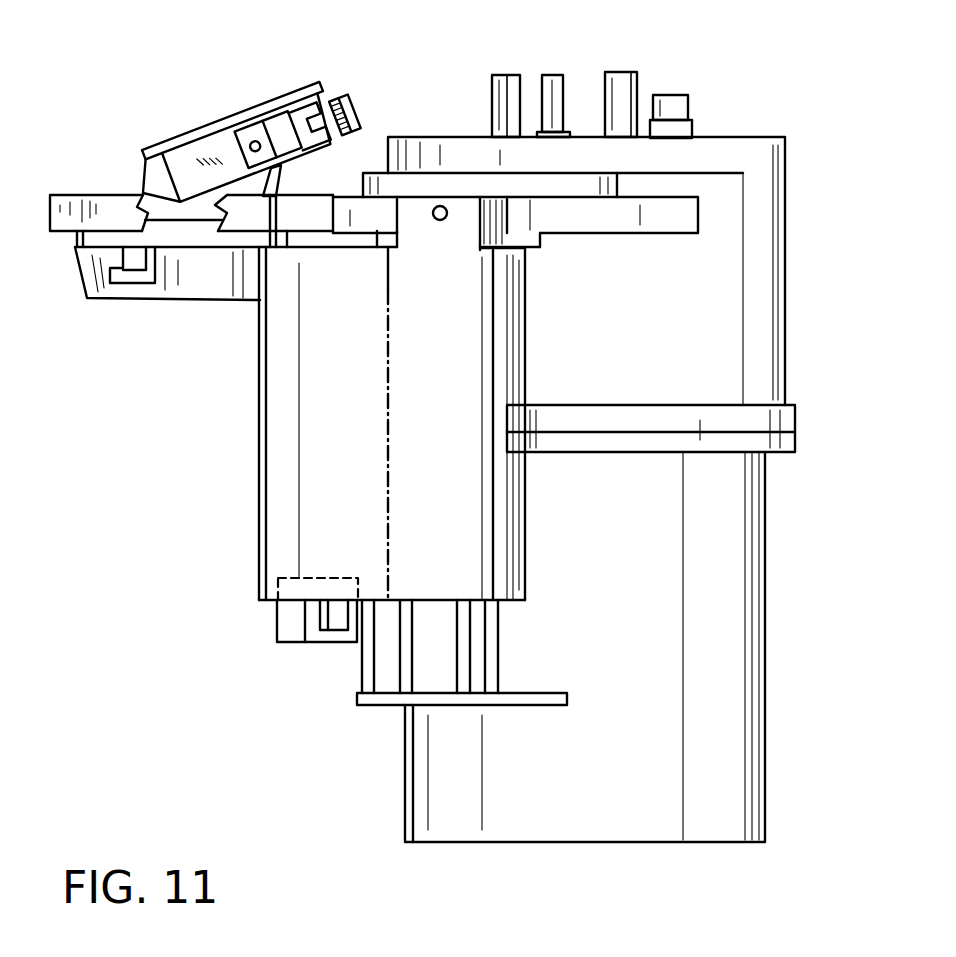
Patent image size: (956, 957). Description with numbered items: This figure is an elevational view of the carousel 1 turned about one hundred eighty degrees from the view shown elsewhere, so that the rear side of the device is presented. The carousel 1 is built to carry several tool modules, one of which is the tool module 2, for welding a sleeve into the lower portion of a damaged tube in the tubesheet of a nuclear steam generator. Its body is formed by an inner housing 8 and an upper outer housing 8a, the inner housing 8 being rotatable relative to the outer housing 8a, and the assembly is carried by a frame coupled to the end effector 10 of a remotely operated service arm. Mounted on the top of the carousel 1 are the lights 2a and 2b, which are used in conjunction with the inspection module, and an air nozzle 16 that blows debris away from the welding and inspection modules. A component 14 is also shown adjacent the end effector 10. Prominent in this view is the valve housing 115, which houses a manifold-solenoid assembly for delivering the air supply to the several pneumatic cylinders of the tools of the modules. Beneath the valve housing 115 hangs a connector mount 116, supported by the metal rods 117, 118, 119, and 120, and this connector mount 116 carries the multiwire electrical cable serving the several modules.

The carousel 1 is at (635, 623).
The tool module 2 is at (678, 100).
The light 2a is at (620, 73).
The light 2b is at (494, 74).
The inner housing 8 is at (742, 748).
The upper outer housing 8a is at (764, 262).
The end effector 10 is at (82, 274).
The mold unit 14 is at (230, 113).
The air nozzle 16 is at (551, 76).
The valve housing 115 is at (266, 480).
The connector mount 116 is at (372, 710).
The metal rod 117 is at (494, 661).
The metal rod 118 is at (458, 667).
The metal rod 119 is at (405, 675).
The metal rod 120 is at (364, 668).